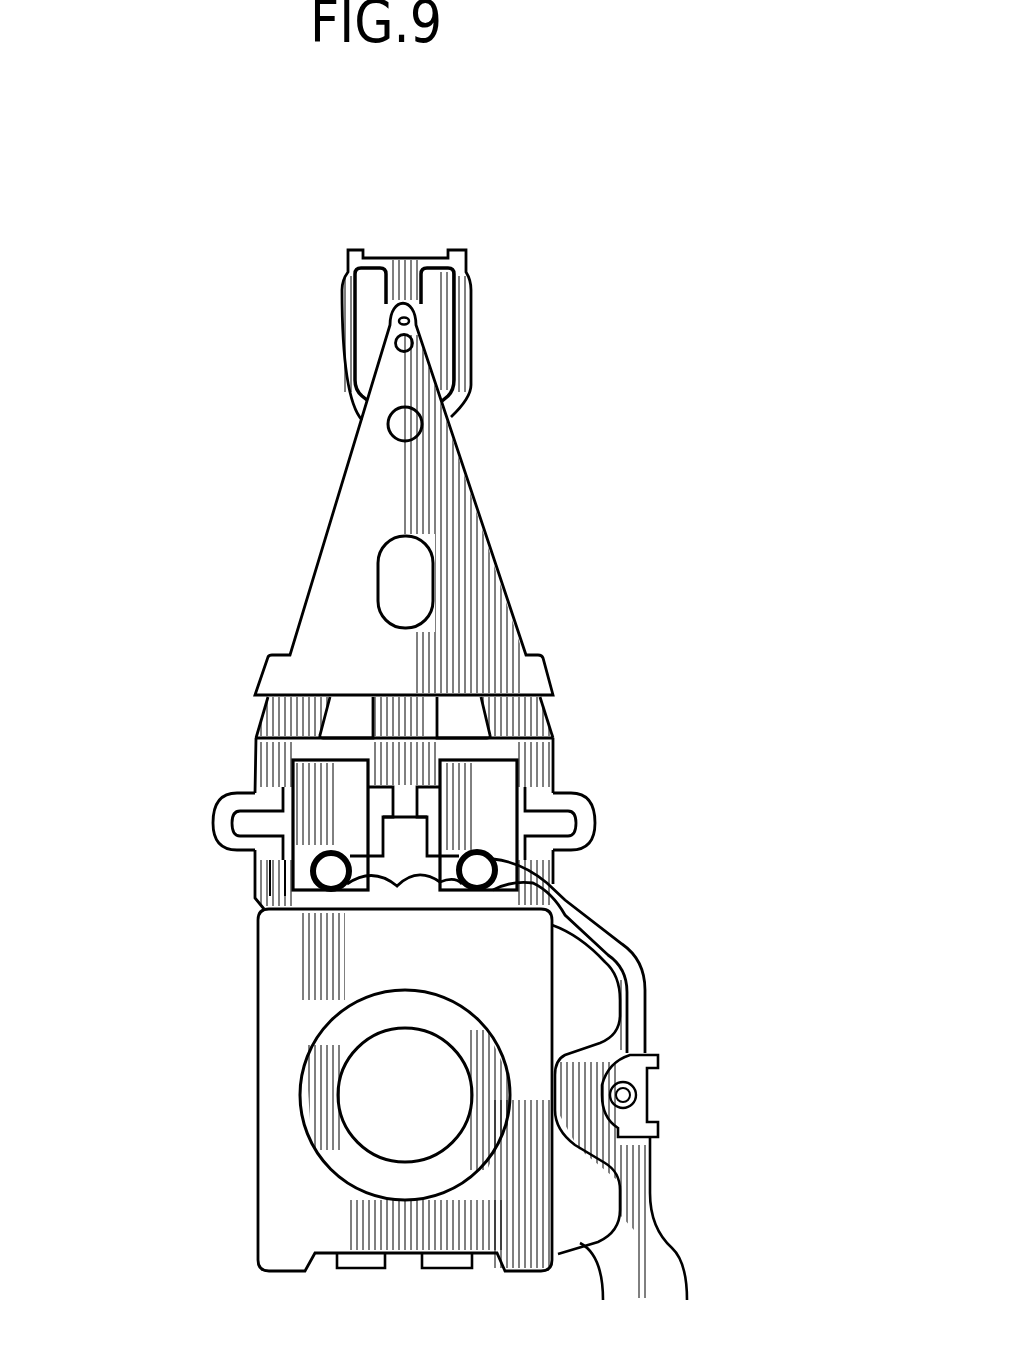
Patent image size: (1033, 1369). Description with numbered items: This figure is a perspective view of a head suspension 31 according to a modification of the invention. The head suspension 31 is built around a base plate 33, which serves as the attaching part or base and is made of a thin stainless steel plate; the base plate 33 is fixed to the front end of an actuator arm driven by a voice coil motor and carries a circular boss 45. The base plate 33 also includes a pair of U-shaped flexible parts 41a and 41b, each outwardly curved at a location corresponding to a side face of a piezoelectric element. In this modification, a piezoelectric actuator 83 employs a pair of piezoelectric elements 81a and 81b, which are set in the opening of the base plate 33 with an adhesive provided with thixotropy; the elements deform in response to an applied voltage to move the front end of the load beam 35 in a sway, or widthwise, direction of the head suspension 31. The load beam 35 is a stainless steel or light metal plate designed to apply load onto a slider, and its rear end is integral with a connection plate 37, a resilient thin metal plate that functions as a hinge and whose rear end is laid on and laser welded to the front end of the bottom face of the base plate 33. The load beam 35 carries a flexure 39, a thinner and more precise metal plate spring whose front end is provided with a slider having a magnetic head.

The head suspension 31 is at (551, 246).
The base plate 33 is at (288, 1053).
The load beam 35 is at (462, 571).
The connection plate 37 is at (497, 683).
The flexure 39 is at (462, 333).
The flexible part 41a is at (214, 824).
The flexible part 41b is at (598, 828).
The circular boss 45 is at (333, 1140).
The piezoelectric element 81a is at (333, 827).
The piezoelectric element 81b is at (478, 807).
The piezoelectric actuator 83 is at (711, 641).